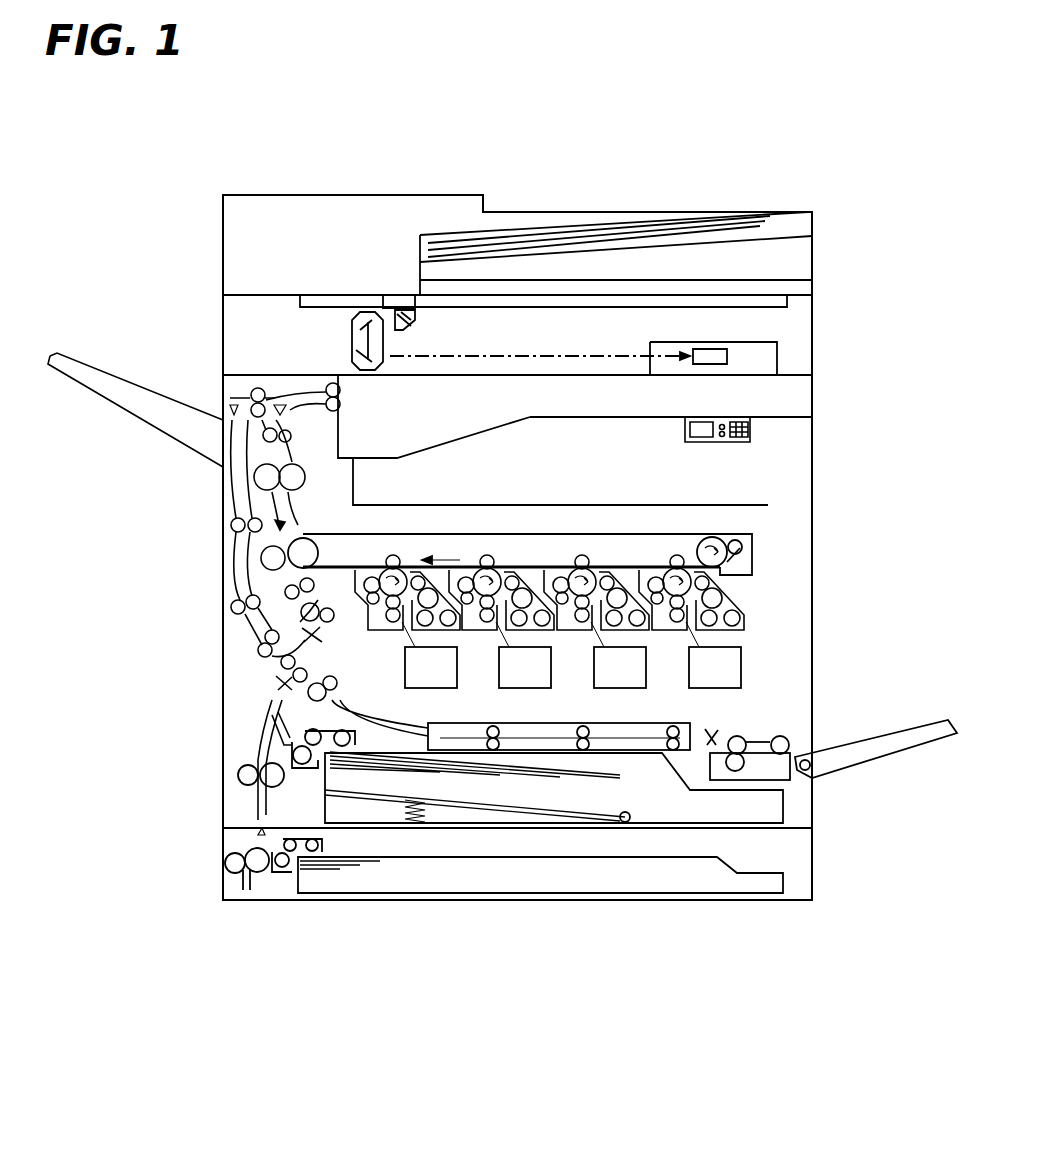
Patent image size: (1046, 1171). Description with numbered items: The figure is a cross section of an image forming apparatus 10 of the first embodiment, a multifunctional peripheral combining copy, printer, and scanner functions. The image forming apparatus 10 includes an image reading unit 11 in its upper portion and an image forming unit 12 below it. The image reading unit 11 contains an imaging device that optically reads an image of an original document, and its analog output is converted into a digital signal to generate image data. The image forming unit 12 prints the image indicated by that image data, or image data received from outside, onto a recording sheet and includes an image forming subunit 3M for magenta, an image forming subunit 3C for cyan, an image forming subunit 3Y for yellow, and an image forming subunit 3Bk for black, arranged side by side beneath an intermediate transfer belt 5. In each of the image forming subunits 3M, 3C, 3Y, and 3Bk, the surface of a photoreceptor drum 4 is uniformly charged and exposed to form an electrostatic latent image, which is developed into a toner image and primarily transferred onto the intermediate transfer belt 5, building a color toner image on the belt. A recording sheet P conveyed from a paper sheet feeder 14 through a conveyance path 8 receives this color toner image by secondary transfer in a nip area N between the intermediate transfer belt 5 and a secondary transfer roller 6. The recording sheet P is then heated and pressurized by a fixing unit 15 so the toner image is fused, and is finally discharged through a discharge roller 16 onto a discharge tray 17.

The image forming apparatus 10 is at (531, 138).
The image reading unit 11 is at (814, 266).
The image forming unit 12 is at (768, 617).
The paper sheet feeder 14 is at (775, 911).
The fixing unit 15 is at (265, 477).
The discharge roller 16 is at (326, 392).
The discharge tray 17 is at (424, 438).
The image forming subunit for magenta 3M is at (392, 550).
The image forming subunit for cyan 3C is at (478, 550).
The image forming subunit for yellow 3Y is at (560, 550).
The image forming subunit for black 3Bk is at (664, 552).
The photoreceptor drum 4 is at (480, 566).
The intermediate transfer belt 5 is at (688, 534).
The secondary transfer roller 6 is at (248, 573).
The conveyance path 8 is at (273, 692).
The nip area N is at (246, 522).
The recording sheet P is at (598, 778).